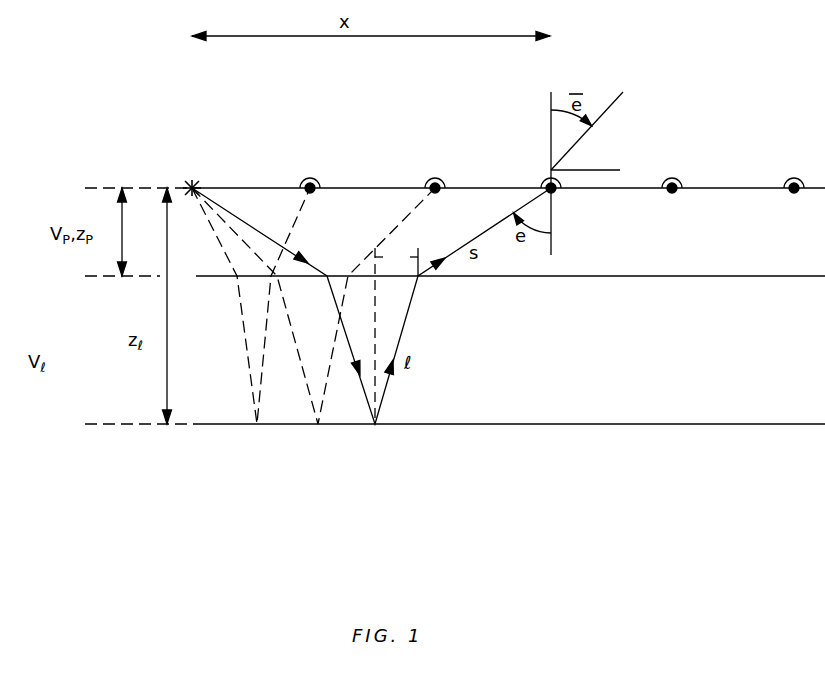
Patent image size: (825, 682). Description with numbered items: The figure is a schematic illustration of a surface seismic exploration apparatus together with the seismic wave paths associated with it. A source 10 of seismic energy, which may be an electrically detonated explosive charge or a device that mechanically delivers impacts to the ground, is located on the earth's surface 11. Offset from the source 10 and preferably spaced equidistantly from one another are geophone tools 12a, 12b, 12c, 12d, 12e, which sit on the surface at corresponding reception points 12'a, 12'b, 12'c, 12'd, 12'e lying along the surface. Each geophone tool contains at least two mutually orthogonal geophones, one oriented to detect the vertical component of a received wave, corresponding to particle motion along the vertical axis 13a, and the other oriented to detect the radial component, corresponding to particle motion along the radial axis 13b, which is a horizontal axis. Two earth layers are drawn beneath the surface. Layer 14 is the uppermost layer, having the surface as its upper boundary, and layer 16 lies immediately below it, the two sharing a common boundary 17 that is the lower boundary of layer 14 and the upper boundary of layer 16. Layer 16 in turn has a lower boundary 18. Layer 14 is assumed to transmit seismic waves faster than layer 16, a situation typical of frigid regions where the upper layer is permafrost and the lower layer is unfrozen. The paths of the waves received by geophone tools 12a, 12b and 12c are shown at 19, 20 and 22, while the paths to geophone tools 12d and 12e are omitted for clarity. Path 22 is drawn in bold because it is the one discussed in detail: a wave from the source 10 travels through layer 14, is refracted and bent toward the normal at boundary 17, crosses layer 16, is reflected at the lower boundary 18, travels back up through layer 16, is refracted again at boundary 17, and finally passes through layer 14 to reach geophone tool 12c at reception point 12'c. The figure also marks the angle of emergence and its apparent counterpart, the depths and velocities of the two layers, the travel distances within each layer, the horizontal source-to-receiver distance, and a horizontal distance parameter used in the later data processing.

The source 10 is at (192, 184).
The earth's surface 11 is at (253, 188).
The geophone tool 12a is at (311, 179).
The geophone tool 12b is at (436, 179).
The geophone tool 12c is at (542, 183).
The geophone tool 12d is at (673, 179).
The geophone tool 12e is at (795, 179).
The reception point 12'a is at (333, 207).
The reception point 12'b is at (458, 207).
The reception point 12'c is at (572, 207).
The reception point 12'd is at (672, 217).
The reception point 12'e is at (794, 217).
The vertical axis 13a is at (551, 126).
The radial axis 13b is at (620, 170).
The layer 14 is at (738, 250).
The layer 16 is at (762, 370).
The common boundary 17 is at (569, 279).
The lower boundary 18 is at (602, 424).
The path 19 is at (256, 404).
The path 20 is at (315, 404).
The path 22 is at (369, 404).